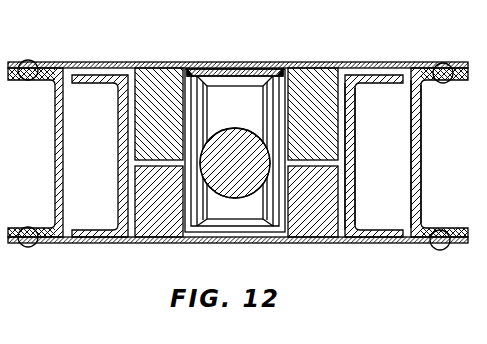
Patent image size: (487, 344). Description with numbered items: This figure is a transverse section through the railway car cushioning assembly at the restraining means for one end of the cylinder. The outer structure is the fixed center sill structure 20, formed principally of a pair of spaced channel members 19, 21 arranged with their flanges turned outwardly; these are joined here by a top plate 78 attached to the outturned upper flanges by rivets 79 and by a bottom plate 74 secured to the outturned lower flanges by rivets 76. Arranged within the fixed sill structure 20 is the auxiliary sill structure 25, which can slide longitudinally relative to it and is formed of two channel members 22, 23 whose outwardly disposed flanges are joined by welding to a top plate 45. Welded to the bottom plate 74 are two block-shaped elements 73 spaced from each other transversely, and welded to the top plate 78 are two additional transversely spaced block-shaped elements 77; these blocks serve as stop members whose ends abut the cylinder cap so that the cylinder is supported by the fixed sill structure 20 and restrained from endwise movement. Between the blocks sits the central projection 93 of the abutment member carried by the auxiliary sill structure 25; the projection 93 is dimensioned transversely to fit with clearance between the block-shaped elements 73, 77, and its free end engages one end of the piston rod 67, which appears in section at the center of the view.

The channel member 19 is at (54, 165).
The center sill structure 20 is at (425, 130).
The channel member 21 is at (421, 190).
The channel member 22 is at (118, 166).
The channel member 23 is at (355, 190).
The auxiliary sill structure 25 is at (360, 130).
The top plate 45 is at (216, 72).
The piston rod 67 is at (237, 190).
The block-shaped elements 73 is at (168, 218).
The bottom plate 74 is at (114, 244).
The rivets 76 is at (28, 227).
The block-shaped elements 77 is at (161, 76).
The top plate 78 is at (251, 62).
The rivets 79 is at (33, 60).
The central projection 93 is at (245, 108).